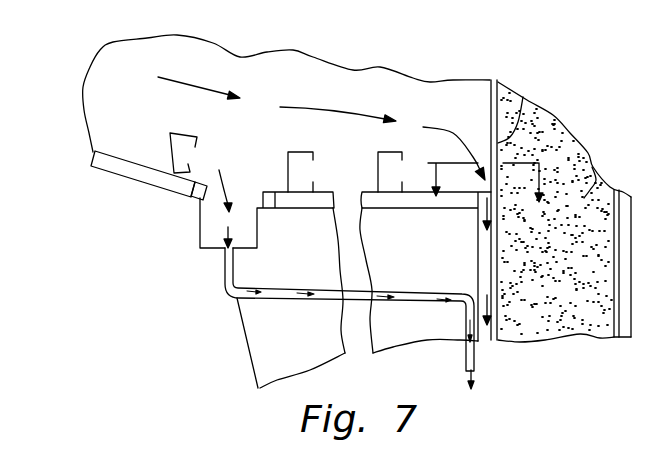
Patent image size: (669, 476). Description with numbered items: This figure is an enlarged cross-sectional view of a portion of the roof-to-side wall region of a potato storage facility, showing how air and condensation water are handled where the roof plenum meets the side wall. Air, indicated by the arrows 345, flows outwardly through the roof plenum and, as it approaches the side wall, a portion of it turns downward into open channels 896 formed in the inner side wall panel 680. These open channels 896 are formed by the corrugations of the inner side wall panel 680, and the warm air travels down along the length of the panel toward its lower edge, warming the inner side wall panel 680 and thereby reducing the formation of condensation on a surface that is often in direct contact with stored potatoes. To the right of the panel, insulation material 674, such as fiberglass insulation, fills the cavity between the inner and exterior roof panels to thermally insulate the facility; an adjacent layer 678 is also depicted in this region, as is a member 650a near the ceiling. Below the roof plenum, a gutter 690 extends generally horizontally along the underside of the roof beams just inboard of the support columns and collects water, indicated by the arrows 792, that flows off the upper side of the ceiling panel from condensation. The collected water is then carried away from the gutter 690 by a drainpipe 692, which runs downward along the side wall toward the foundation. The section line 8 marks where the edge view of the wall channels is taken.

The air flow arrows 345 is at (199, 83).
The header / deflector bar 650a is at (152, 190).
The gutter 690 is at (197, 223).
The drainpipe 692 is at (277, 303).
The water flow arrows 792 is at (228, 158).
The inner side wall panel 680 is at (478, 243).
The open channels 896 is at (487, 258).
The insulation layer 678 is at (522, 97).
The insulation material 674 is at (593, 165).
The section line 8- 8 is at (487, 176).